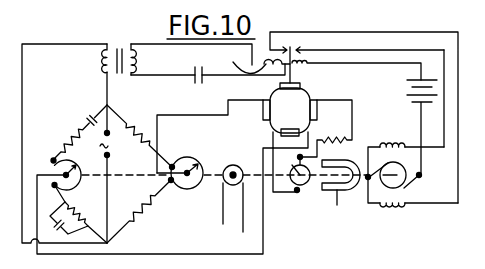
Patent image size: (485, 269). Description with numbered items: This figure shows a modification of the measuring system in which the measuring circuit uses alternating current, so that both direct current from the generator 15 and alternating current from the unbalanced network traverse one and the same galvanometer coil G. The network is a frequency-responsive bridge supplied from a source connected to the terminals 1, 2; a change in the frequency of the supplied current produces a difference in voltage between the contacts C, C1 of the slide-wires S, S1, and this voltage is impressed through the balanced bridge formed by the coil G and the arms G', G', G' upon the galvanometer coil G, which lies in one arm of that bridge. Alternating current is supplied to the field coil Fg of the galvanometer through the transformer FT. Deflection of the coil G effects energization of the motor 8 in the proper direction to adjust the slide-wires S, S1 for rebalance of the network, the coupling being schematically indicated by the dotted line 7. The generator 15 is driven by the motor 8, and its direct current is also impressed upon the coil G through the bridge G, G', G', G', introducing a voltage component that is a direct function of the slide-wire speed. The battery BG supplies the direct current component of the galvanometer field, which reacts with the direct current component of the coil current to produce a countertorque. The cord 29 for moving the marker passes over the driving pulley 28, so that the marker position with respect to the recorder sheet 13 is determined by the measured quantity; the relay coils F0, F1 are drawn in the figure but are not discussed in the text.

The transformer FT is at (121, 43).
The field coil Fg is at (249, 63).
The battery BG is at (195, 83).
The galvanometer coil G is at (301, 90).
The bridge arm G' is at (292, 124).
The slide-wire S is at (77, 165).
The contact C is at (75, 178).
The terminal 1 is at (112, 134).
The terminal 2 is at (112, 157).
The slide-wire S1 is at (188, 158).
The contact C1 is at (192, 178).
The driving pulley 28 is at (233, 164).
The cord 29 is at (223, 224).
The generator 15 is at (297, 191).
The dotted line 7 is at (341, 192).
The relay coil F0 is at (387, 141).
The relay coil F1 is at (397, 209).
The motor 8 is at (409, 183).
The recorder sheet 13 is at (426, 175).